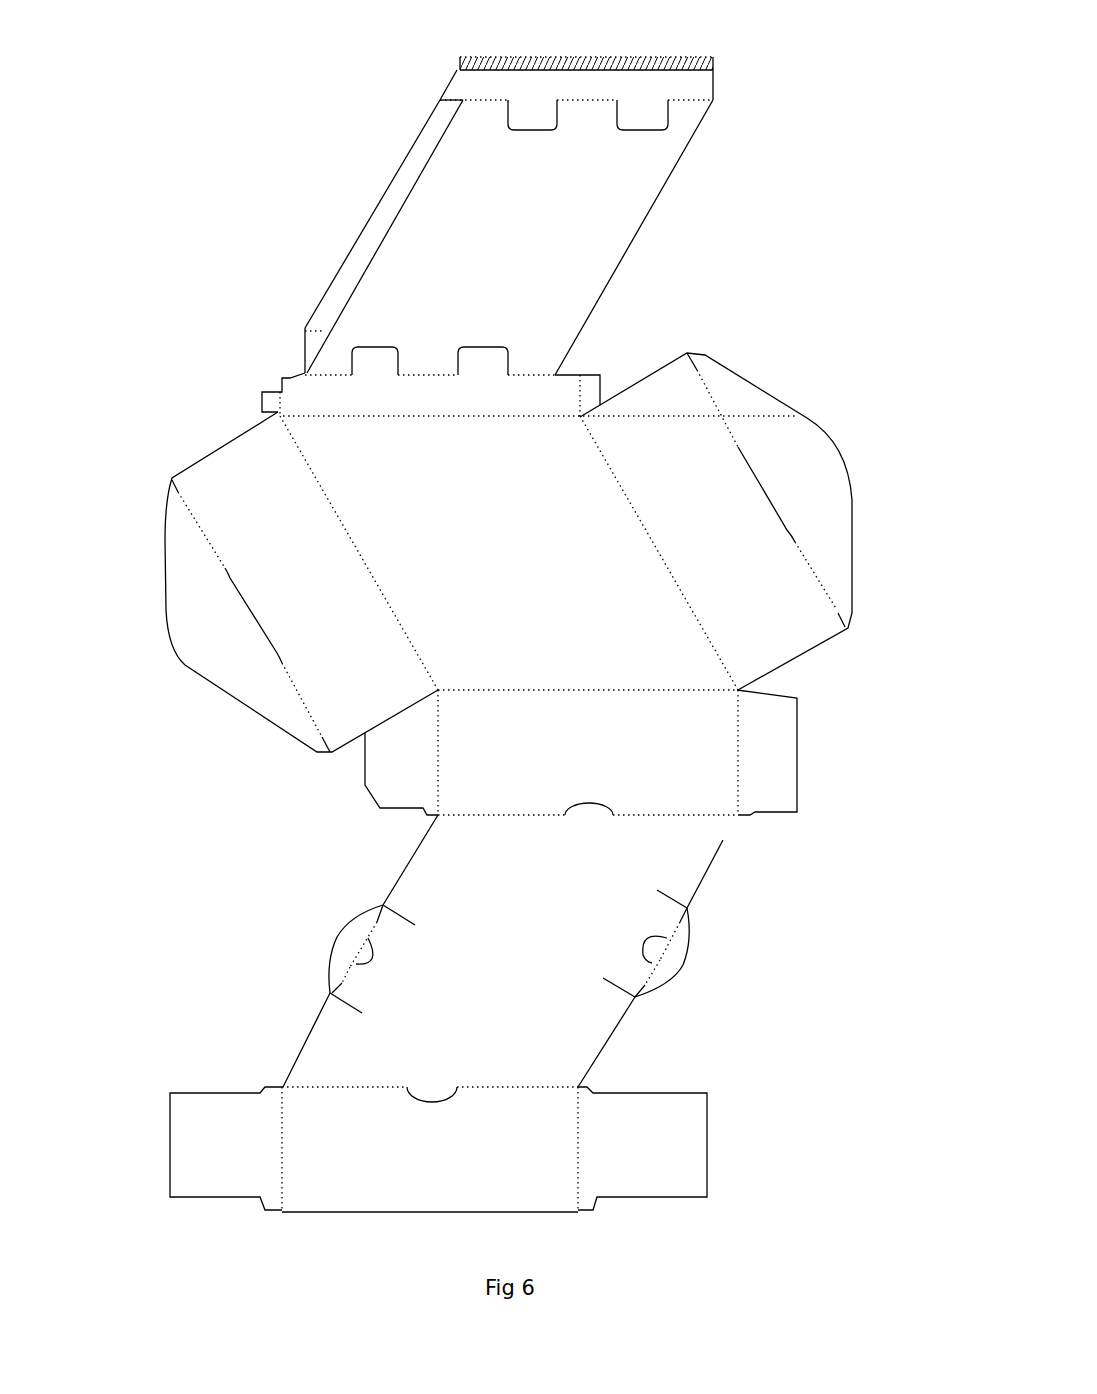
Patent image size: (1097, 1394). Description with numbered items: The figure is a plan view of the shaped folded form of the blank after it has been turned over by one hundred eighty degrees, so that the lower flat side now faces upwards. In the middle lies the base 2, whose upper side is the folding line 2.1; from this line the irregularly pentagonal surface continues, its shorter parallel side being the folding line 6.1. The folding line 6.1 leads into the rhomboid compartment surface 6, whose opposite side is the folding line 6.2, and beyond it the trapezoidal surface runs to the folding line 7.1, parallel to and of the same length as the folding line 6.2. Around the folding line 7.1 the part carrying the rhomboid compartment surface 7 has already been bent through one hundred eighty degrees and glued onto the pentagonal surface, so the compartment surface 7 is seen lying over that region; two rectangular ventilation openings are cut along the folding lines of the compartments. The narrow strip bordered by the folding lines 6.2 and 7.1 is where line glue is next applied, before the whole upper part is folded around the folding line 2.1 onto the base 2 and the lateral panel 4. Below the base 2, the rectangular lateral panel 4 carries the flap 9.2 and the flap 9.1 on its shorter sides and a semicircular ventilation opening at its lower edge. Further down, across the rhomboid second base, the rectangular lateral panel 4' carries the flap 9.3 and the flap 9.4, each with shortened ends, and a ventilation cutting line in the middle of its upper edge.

The folding line 7.1 is at (703, 57).
The folding line 6.2 is at (713, 100).
The compartment surface 6 is at (487, 160).
The compartment surface 7 is at (382, 222).
The folding line 6.1 is at (537, 373).
The folding line 2.1 is at (376, 415).
The base 2 is at (376, 460).
The lateral panel 4 is at (690, 752).
The flap 9.1 is at (413, 770).
The flap 9.2 is at (770, 770).
The lateral panel 4' is at (556, 1149).
The flap 9.3 is at (652, 1145).
The flap 9.4 is at (233, 1145).